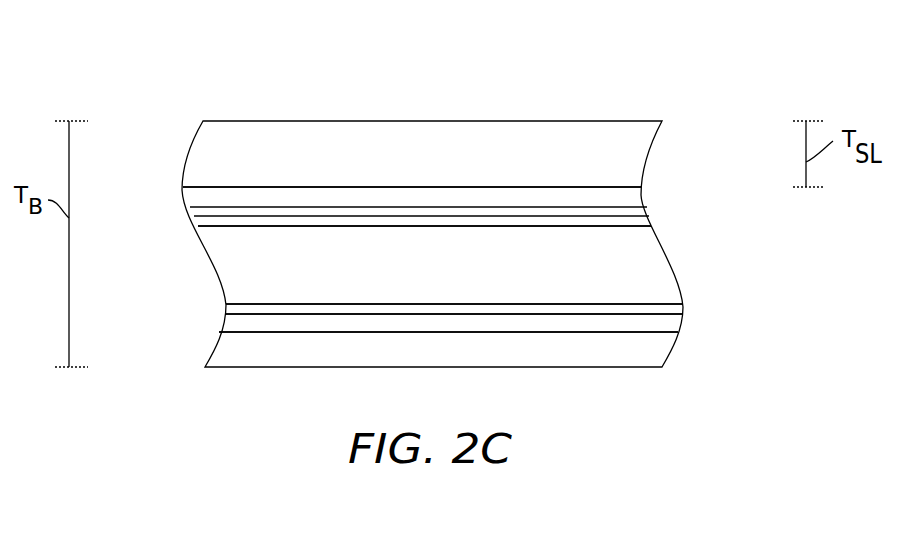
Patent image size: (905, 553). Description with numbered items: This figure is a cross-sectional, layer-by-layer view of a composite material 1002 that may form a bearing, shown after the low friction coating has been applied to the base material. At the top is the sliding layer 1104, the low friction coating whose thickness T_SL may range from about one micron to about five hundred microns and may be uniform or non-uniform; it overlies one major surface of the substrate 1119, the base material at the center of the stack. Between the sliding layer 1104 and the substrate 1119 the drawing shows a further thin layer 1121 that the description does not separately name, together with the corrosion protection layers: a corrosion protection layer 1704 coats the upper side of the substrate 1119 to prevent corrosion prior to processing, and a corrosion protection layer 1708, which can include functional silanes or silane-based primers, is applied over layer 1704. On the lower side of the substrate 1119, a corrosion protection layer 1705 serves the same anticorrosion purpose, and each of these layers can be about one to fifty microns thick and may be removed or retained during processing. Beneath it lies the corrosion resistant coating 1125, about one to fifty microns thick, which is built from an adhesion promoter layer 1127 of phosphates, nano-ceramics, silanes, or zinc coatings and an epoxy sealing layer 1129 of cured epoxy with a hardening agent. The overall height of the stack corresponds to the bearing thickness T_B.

The composite material 1002 is at (770, 74).
The sliding layer 1104 is at (188, 160).
The layer 1121 is at (186, 200).
The corrosion protection layer 1708 is at (646, 212).
The corrosion protection layer 1704 is at (648, 220).
The substrate 1119 is at (207, 250).
The corrosion protection layer 1705 is at (683, 308).
The adhesion promoter layer 1127 is at (222, 326).
The epoxy sealing layer 1129 is at (208, 356).
The corrosion resistant coating 1125 is at (693, 315).